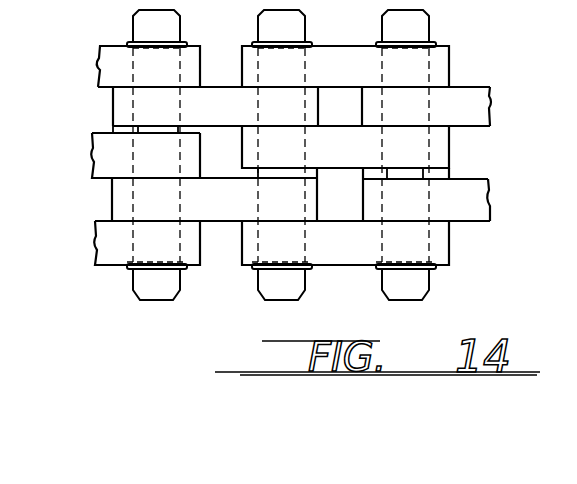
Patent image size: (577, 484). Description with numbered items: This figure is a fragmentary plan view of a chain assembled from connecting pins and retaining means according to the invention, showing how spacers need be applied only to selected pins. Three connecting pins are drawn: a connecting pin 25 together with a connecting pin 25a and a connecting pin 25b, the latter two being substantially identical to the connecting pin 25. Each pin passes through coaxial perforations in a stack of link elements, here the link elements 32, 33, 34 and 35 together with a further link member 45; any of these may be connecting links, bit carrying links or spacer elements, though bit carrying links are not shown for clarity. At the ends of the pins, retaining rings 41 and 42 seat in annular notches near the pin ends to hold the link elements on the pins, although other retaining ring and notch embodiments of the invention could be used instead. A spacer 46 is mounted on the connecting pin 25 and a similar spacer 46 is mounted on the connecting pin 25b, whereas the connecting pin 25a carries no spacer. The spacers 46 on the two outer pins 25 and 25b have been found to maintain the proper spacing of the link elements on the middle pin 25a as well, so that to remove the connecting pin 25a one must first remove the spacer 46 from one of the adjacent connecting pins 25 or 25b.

The connecting pin 25 is at (157, 300).
The connecting pin 25a is at (275, 301).
The connecting pin 25b is at (405, 302).
The link element 32 is at (92, 238).
The link element 33 is at (115, 198).
The link element 34 is at (120, 107).
The link element 35 is at (102, 70).
The retaining ring 41 is at (128, 271).
The retaining ring 42 is at (183, 43).
The link member 45 is at (95, 160).
The spacer 46 is at (113, 127).